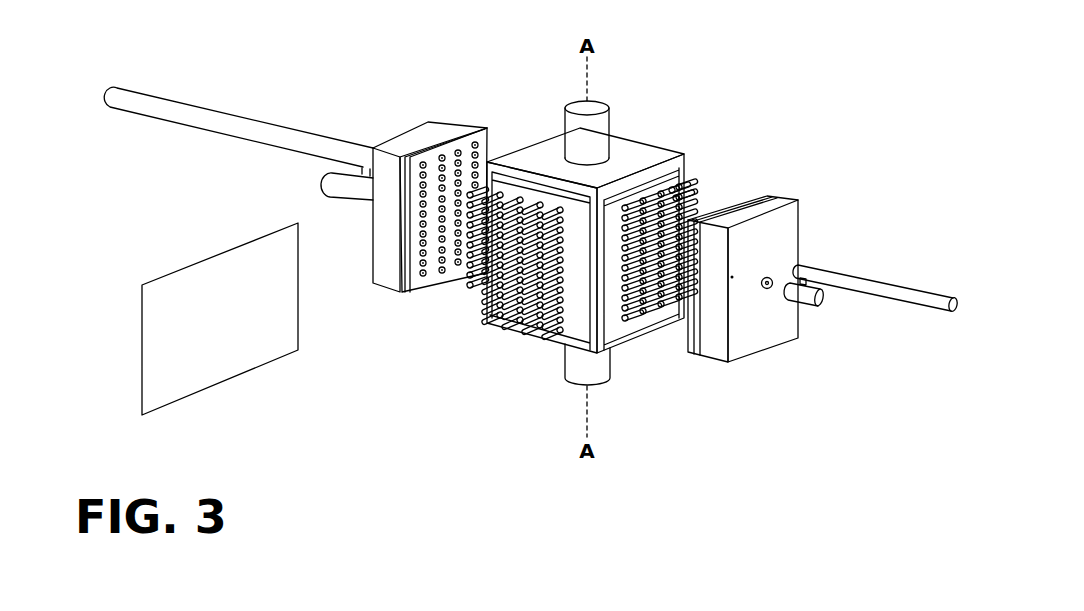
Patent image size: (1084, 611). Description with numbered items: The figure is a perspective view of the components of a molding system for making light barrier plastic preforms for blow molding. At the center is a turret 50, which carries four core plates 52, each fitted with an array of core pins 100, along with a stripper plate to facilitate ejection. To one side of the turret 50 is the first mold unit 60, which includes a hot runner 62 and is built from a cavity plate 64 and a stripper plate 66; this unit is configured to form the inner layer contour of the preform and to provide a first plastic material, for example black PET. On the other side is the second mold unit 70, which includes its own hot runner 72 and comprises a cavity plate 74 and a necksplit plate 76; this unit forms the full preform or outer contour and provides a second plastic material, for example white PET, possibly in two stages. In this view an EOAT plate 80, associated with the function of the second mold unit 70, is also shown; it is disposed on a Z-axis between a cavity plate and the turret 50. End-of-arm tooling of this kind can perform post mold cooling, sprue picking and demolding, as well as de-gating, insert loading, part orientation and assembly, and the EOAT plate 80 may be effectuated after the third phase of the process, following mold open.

The turret 50 is at (613, 216).
The core plate 52 is at (527, 183).
The first mold unit 60 is at (825, 245).
The hot runner 62 is at (873, 285).
The cavity plate 64 is at (743, 203).
The stripper plate 66 is at (760, 197).
The second mold unit 70 is at (433, 160).
The hot runner 72 is at (255, 133).
The cavity plate 74 is at (418, 124).
The necksplit plate 76 is at (450, 135).
The EOAT plate 80 is at (280, 360).
The core pins 100 is at (477, 295).